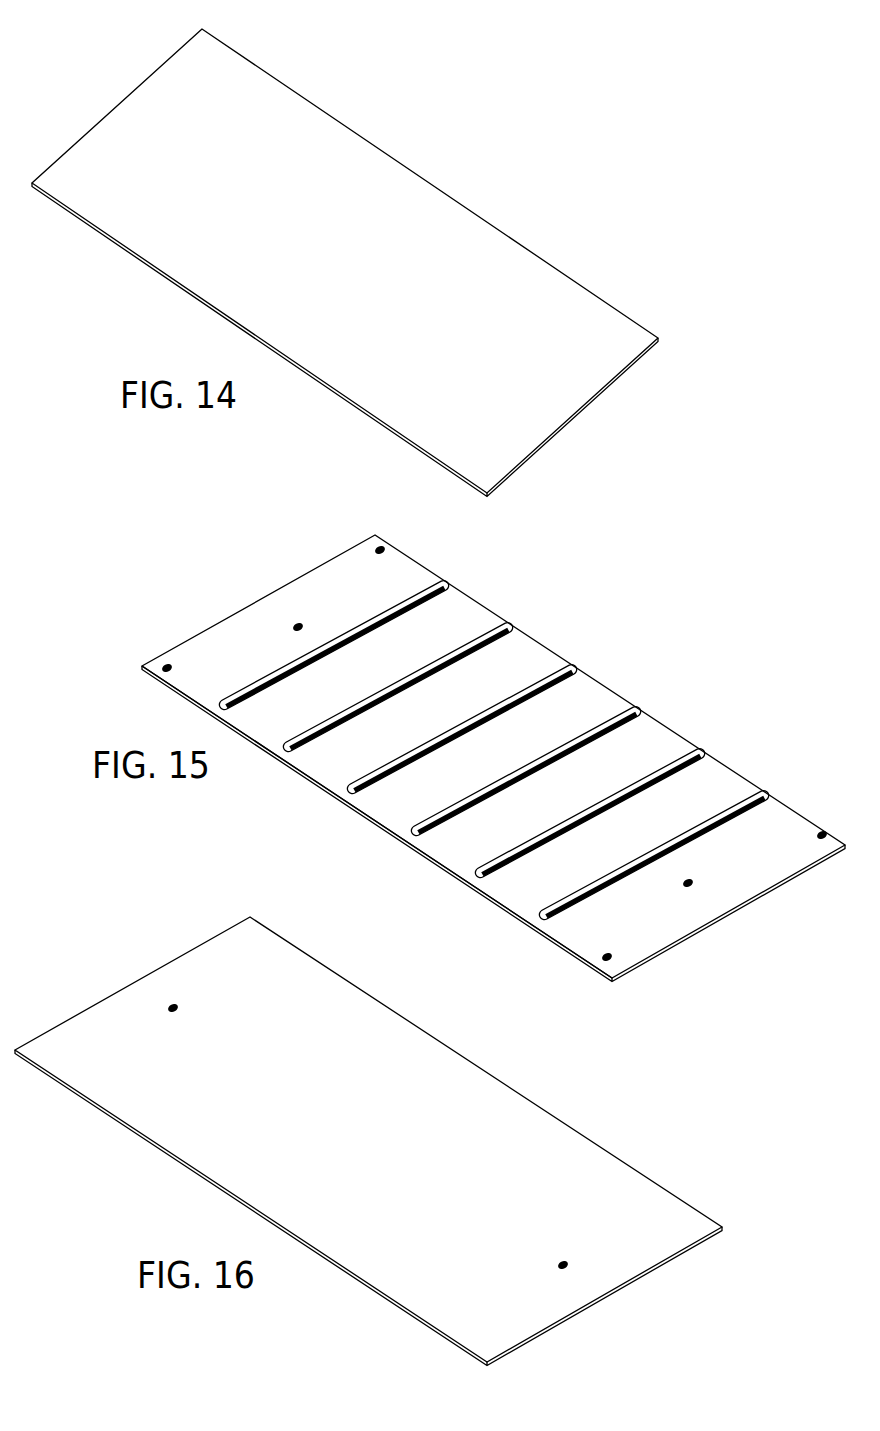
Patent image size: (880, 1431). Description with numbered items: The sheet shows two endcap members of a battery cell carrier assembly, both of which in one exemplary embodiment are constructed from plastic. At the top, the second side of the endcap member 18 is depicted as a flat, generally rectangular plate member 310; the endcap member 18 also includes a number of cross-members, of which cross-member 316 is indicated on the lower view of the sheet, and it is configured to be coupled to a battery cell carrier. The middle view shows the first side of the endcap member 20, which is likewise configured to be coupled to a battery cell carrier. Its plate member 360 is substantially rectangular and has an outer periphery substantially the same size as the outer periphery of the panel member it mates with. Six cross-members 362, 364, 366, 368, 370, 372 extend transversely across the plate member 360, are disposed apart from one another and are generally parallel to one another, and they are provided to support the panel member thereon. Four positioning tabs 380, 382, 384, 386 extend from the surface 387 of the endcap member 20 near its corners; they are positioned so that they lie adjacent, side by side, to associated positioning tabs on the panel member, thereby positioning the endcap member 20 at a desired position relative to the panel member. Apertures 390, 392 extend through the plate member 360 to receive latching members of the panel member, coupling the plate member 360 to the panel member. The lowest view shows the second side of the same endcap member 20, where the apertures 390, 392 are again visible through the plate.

In FIG. 14, the endcap member 18 is at (345, 263).
In FIG. 14, the plate member 310 is at (478, 216).
In FIG. 15, the endcap member 20 is at (493, 722).
In FIG. 16, the endcap member 20 is at (368, 1139).
In FIG. 15, the plate member 360 is at (748, 779).
In FIG. 15, the cross-member 362 is at (363, 643).
In FIG. 15, the cross-member 364 is at (430, 688).
In FIG. 15, the cross-member 366 is at (493, 730).
In FIG. 15, the cross-member 368 is at (557, 772).
In FIG. 15, the cross-member 370 is at (621, 813).
In FIG. 15, the cross-member 372 is at (685, 853).
In FIG. 15, the positioning tab 380 is at (167, 666).
In FIG. 15, the positioning tab 382 is at (380, 547).
In FIG. 15, the positioning tab 384 is at (607, 956).
In FIG. 15, the positioning tab 386 is at (822, 834).
In FIG. 15, the surface 387 is at (392, 807).
In FIG. 15, the aperture 390 is at (298, 624).
In FIG. 16, the aperture 390 is at (174, 1006).
In FIG. 15, the aperture 392 is at (689, 883).
In FIG. 16, the aperture 392 is at (563, 1265).
In FIG. 16, the cross-member 316 is at (463, 1053).